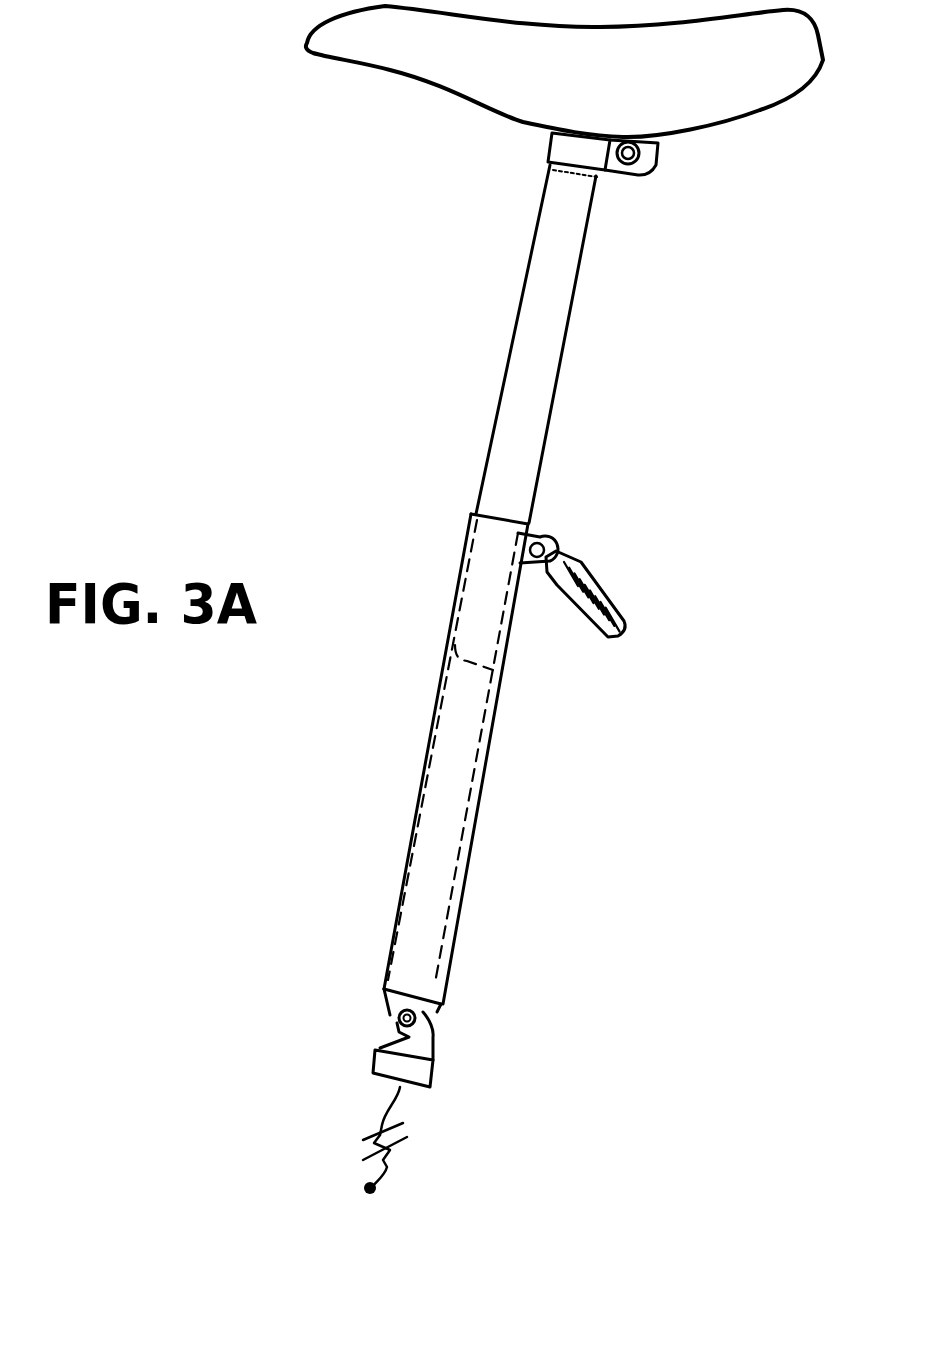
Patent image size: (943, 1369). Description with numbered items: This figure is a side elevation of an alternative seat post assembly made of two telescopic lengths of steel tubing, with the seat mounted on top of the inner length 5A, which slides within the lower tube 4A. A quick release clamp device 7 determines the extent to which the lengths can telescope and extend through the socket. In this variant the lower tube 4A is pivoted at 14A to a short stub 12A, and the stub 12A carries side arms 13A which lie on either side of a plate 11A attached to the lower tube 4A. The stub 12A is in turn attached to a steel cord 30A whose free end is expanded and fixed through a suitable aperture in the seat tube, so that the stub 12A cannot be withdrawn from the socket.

The lower tube 4A is at (480, 802).
The inner length of tubing 5A is at (563, 353).
The quick release clamp device 7 is at (557, 549).
The plate 11A is at (442, 1005).
The stub 12A is at (377, 1060).
The side arms 13A is at (437, 1047).
The pivot 14A is at (395, 1020).
The steel cord 30A is at (390, 1162).